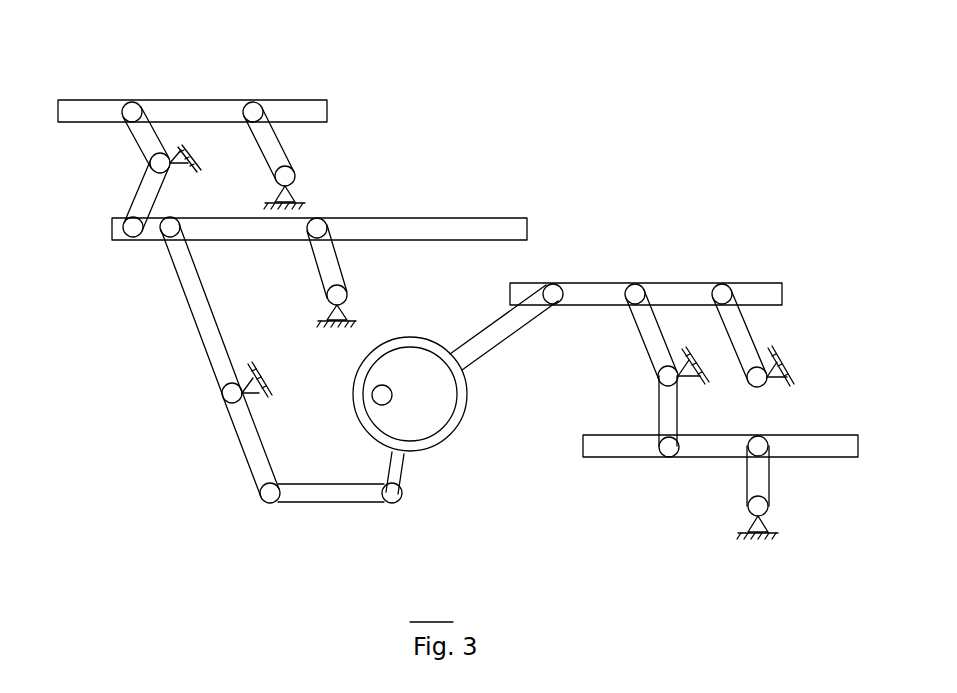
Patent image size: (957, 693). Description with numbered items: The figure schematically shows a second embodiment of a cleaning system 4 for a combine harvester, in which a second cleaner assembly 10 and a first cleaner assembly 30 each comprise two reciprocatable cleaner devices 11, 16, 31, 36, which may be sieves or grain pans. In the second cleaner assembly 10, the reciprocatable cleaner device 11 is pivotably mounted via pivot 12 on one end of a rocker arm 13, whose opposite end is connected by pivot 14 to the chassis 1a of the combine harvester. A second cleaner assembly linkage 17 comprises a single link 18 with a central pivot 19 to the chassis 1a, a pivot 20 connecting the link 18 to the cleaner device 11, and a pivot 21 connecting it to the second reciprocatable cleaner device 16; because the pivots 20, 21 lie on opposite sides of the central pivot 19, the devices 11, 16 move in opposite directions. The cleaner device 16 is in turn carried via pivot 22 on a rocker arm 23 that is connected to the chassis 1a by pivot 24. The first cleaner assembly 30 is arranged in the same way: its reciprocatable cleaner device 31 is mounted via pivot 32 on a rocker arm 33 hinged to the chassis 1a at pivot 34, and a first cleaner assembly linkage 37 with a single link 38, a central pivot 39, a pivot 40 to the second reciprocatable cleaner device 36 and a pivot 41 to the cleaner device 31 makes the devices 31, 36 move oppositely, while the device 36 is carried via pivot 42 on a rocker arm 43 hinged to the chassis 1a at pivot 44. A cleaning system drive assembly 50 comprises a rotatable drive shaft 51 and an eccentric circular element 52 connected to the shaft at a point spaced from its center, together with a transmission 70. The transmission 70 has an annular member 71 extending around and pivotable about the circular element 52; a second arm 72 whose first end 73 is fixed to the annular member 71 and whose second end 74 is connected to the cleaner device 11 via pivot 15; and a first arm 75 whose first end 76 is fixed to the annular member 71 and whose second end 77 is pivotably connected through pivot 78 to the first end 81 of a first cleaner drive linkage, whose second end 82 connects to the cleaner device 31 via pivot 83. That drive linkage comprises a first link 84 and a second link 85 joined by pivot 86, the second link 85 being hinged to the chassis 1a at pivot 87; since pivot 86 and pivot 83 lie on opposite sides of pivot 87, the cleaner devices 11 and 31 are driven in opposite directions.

The cleaning system 4 is at (556, 49).
The chassis 1a is at (198, 158).
The second cleaner assembly 10 is at (686, 221).
The reciprocatable cleaner device 11 is at (770, 290).
The pivot 12 is at (726, 288).
The rocker arm 13 is at (740, 333).
The pivot 14 is at (753, 387).
The pivot 15 is at (556, 284).
The reciprocatable cleaner device 16 is at (836, 438).
The second cleaner assembly linkage 17 is at (614, 374).
The link 18 is at (644, 333).
The central pivot 19 is at (660, 383).
The pivot 20 is at (637, 288).
The pivot 21 is at (668, 457).
The pivot 22 is at (764, 440).
The rocker arm 23 is at (762, 483).
The pivot 24 is at (770, 513).
The first cleaner assembly 30 is at (409, 137).
The reciprocatable cleaner device 31 is at (369, 217).
The pivot 32 is at (326, 220).
The rocker arm 33 is at (340, 265).
The pivot 34 is at (349, 296).
The reciprocatable cleaner device 36 is at (315, 105).
The first cleaner assembly linkage 37 is at (80, 177).
The link 38 is at (138, 148).
The central pivot 39 is at (150, 166).
The pivot 40 is at (135, 101).
The pivot 41 is at (124, 230).
The pivot 42 is at (255, 101).
The rocker arm 43 is at (277, 145).
The pivot 44 is at (296, 172).
The cleaning system drive assembly 50 is at (486, 531).
The rotatable drive shaft 51 is at (372, 398).
The circular element 52 is at (424, 357).
The transmission 70 is at (246, 539).
The annular member 71 is at (462, 423).
The second arm 72 is at (507, 342).
The first end 73 is at (454, 362).
The second end 74 is at (543, 308).
The first arm 75 is at (387, 466).
The first end 76 is at (404, 461).
The second end 77 is at (403, 493).
The pivot 78 is at (400, 502).
The first end 81 is at (376, 508).
The second end 82 is at (180, 248).
The pivot 83 is at (164, 243).
The first link 84 is at (333, 510).
The second link 85 is at (203, 333).
The pivot 86 is at (260, 502).
The pivot 87 is at (222, 401).